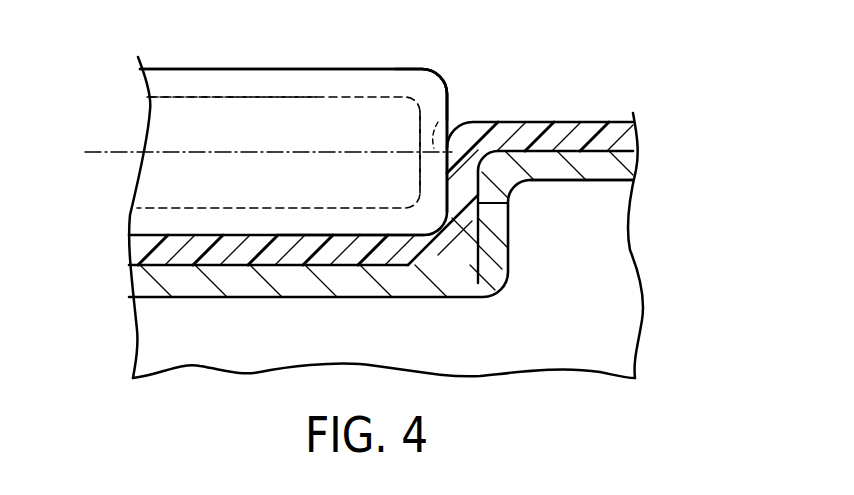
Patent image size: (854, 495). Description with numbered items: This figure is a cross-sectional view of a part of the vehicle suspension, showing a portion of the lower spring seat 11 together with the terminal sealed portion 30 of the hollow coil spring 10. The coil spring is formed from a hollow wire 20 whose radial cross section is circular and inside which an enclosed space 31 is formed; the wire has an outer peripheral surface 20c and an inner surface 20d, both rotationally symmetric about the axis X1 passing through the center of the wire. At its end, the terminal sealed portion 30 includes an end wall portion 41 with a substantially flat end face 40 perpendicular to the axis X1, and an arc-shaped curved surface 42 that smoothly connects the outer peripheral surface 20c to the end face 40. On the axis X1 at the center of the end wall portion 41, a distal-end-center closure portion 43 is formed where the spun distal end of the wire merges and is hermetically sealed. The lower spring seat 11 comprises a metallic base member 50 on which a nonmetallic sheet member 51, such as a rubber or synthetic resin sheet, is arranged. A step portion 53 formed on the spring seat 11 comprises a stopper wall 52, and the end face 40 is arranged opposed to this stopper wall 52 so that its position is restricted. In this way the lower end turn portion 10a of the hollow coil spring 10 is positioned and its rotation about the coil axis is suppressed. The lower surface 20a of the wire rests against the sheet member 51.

The hollow coil spring 10 is at (318, 69).
The lower end turn portion 10a is at (320, 190).
The lower spring seat 11 is at (640, 165).
The wire 20 is at (184, 69).
The rear surface of display panel 20a is at (395, 223).
The outer peripheral surface 20c is at (398, 69).
The inner surface 20d is at (275, 102).
The terminal sealed portion 30 is at (450, 62).
The enclosed space 31 is at (185, 142).
The end face 40 is at (470, 128).
The end wall portion 41 is at (440, 118).
The arc-shaped curved surface 42 is at (490, 285).
The distal-end-center closure portion 43 is at (420, 127).
The base member 50 is at (232, 287).
The sheet member 51 is at (165, 257).
The stopper wall 52 is at (508, 203).
The step portion 53 is at (495, 245).
The axis X1 is at (108, 155).